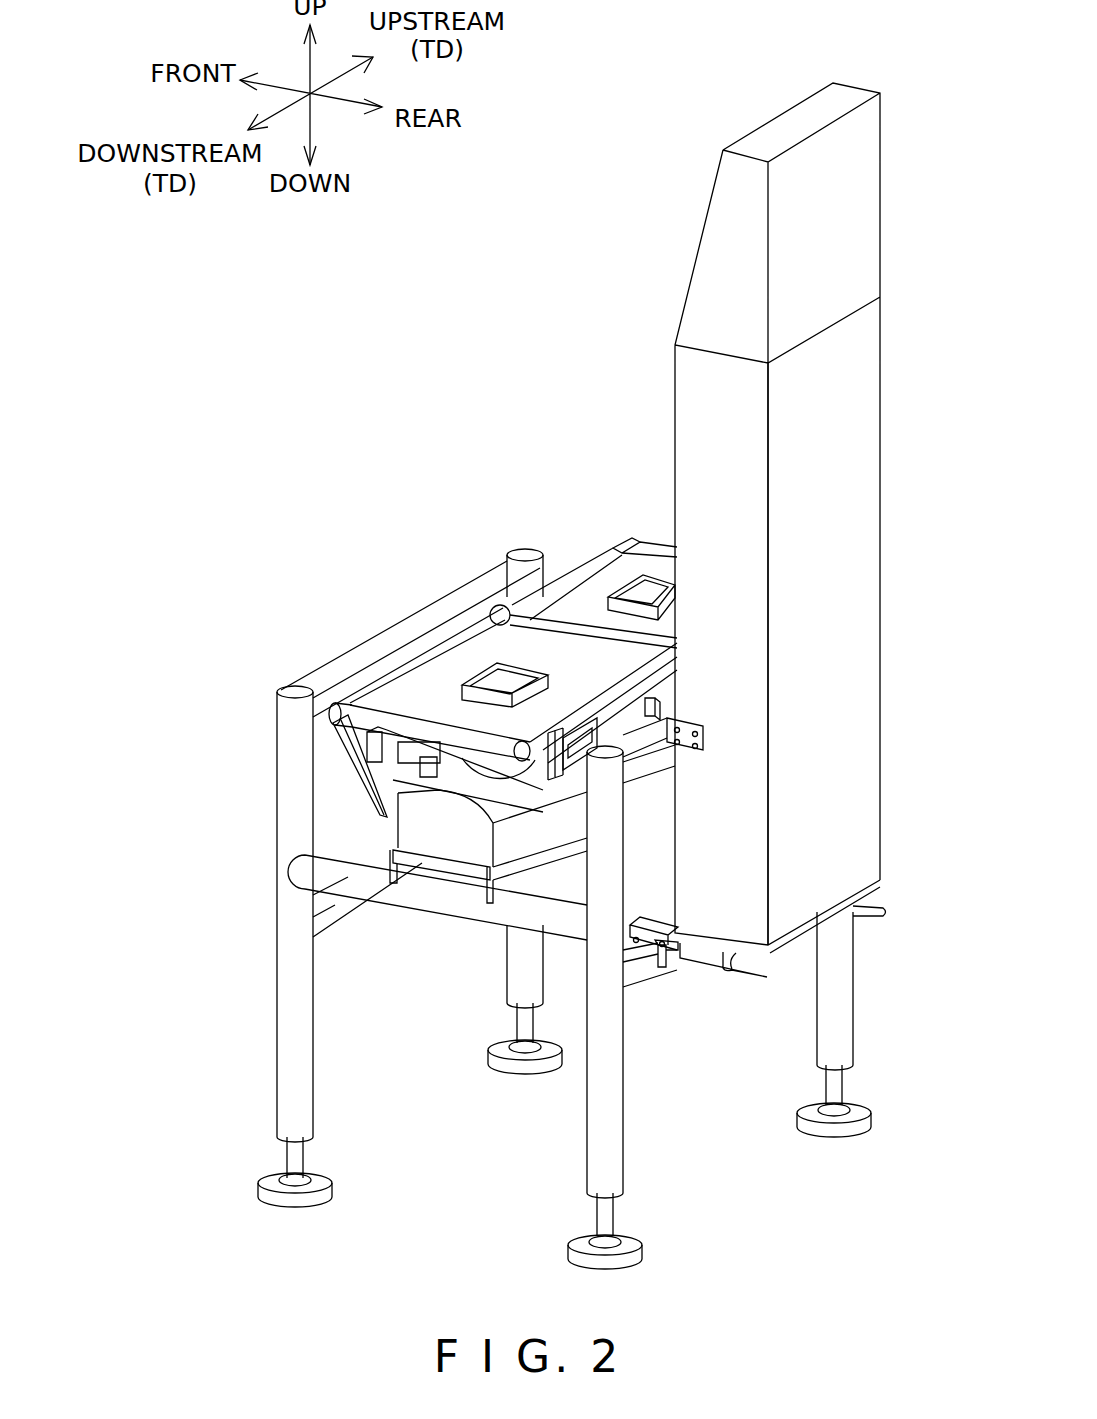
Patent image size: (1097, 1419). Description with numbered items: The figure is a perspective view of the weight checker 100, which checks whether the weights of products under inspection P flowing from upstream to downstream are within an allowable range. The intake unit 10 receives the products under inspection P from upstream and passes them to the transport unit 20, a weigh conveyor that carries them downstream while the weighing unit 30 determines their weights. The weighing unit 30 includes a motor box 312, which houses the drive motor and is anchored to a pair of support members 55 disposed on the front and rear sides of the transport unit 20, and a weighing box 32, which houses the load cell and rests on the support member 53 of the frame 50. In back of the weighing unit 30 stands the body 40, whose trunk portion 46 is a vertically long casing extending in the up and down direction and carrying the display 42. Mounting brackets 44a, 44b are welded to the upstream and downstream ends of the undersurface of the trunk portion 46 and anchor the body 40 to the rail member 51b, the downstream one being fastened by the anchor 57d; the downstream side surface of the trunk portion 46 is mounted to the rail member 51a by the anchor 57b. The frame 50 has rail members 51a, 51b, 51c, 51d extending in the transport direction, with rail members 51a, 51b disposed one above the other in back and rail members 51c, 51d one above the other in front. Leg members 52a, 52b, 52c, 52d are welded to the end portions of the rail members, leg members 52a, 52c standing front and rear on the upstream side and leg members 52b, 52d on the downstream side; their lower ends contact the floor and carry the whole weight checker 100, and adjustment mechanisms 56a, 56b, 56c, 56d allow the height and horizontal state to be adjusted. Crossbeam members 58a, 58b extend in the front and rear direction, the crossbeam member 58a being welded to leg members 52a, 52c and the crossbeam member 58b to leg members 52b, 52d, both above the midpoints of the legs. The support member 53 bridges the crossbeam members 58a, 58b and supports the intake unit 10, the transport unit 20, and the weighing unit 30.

The weight checker 100 is at (512, 365).
The intake unit 10 is at (652, 567).
The transport unit 20 is at (527, 643).
The weighing unit 30 is at (363, 817).
The motor box 312 is at (367, 752).
The weighing box 32 is at (423, 832).
The body 40 is at (647, 363).
The display 42 is at (683, 180).
The mounting bracket 44a is at (868, 905).
The mounting bracket 44b is at (705, 960).
The trunk portion 46 is at (878, 470).
The frame 50 is at (450, 1103).
The rail member 51a is at (645, 795).
The rail member 51b is at (635, 967).
The rail member 51c is at (345, 675).
The rail member 51d is at (327, 907).
The leg member 52a is at (835, 1033).
The leg member 52b is at (607, 1150).
The leg member 52c is at (523, 990).
The leg member 52d is at (295, 1068).
The support member 53 is at (545, 845).
The support member 55 is at (333, 726).
The adjustment mechanism 56a is at (835, 1088).
The adjustment mechanism 56b is at (607, 1222).
The adjustment mechanism 56c is at (523, 1030).
The adjustment mechanism 56d is at (295, 1163).
The anchor 57b is at (690, 733).
The anchor 57d is at (668, 955).
The crossbeam member 58a is at (632, 748).
The crossbeam member 58b is at (343, 870).
The products under inspection P is at (627, 586).